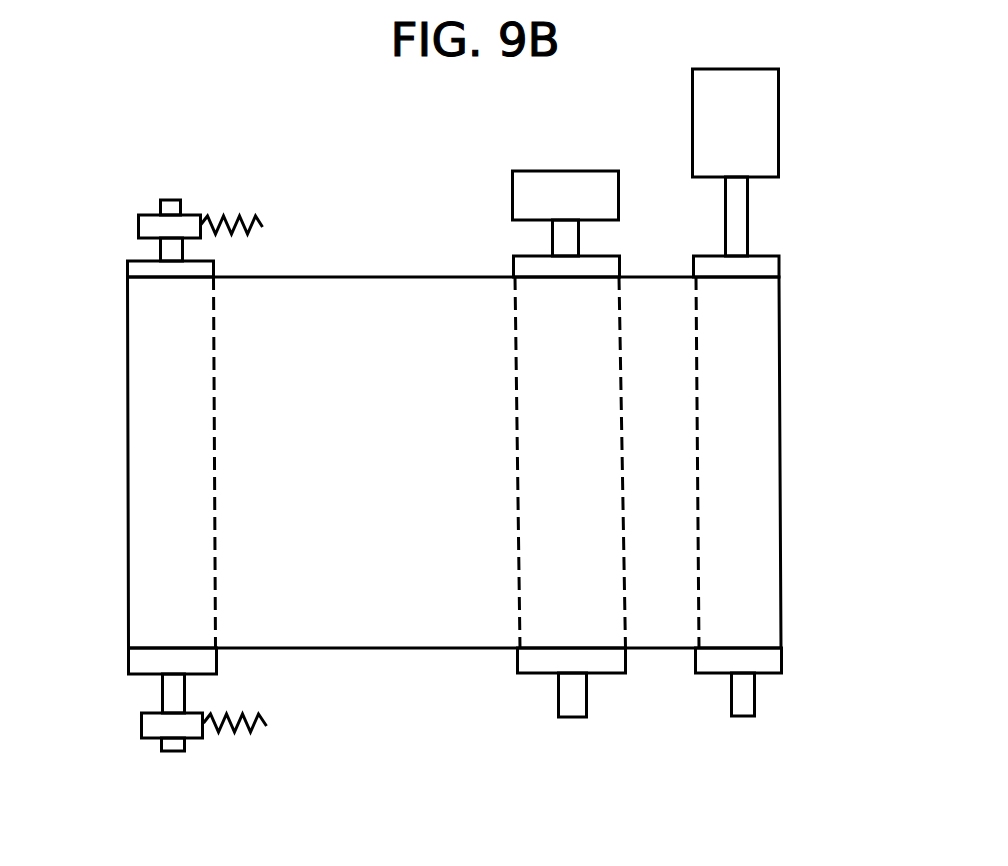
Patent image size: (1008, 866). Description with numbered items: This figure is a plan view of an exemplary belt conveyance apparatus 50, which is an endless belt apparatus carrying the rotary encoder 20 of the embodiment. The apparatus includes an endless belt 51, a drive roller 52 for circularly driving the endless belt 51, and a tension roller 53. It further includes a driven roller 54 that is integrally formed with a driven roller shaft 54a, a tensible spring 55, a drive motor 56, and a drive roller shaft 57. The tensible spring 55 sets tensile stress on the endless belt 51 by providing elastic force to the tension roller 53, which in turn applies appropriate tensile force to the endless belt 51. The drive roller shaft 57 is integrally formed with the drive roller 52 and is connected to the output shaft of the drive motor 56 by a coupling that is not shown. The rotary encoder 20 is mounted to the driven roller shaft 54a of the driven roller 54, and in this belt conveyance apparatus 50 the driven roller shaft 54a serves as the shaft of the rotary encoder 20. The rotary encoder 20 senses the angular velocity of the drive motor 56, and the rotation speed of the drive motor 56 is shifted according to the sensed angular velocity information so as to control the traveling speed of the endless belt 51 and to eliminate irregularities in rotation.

The rotary encoder 20 is at (511, 187).
The belt conveyance apparatus 50 is at (347, 150).
The endless belt 51 is at (357, 282).
The drive roller 52 is at (698, 659).
The tension roller 53 is at (204, 268).
The driven roller 54 is at (519, 659).
The driven roller shaft 54a is at (552, 229).
The tensible spring 55 is at (224, 222).
The drive motor 56 is at (769, 122).
The drive roller shaft 57 is at (737, 204).